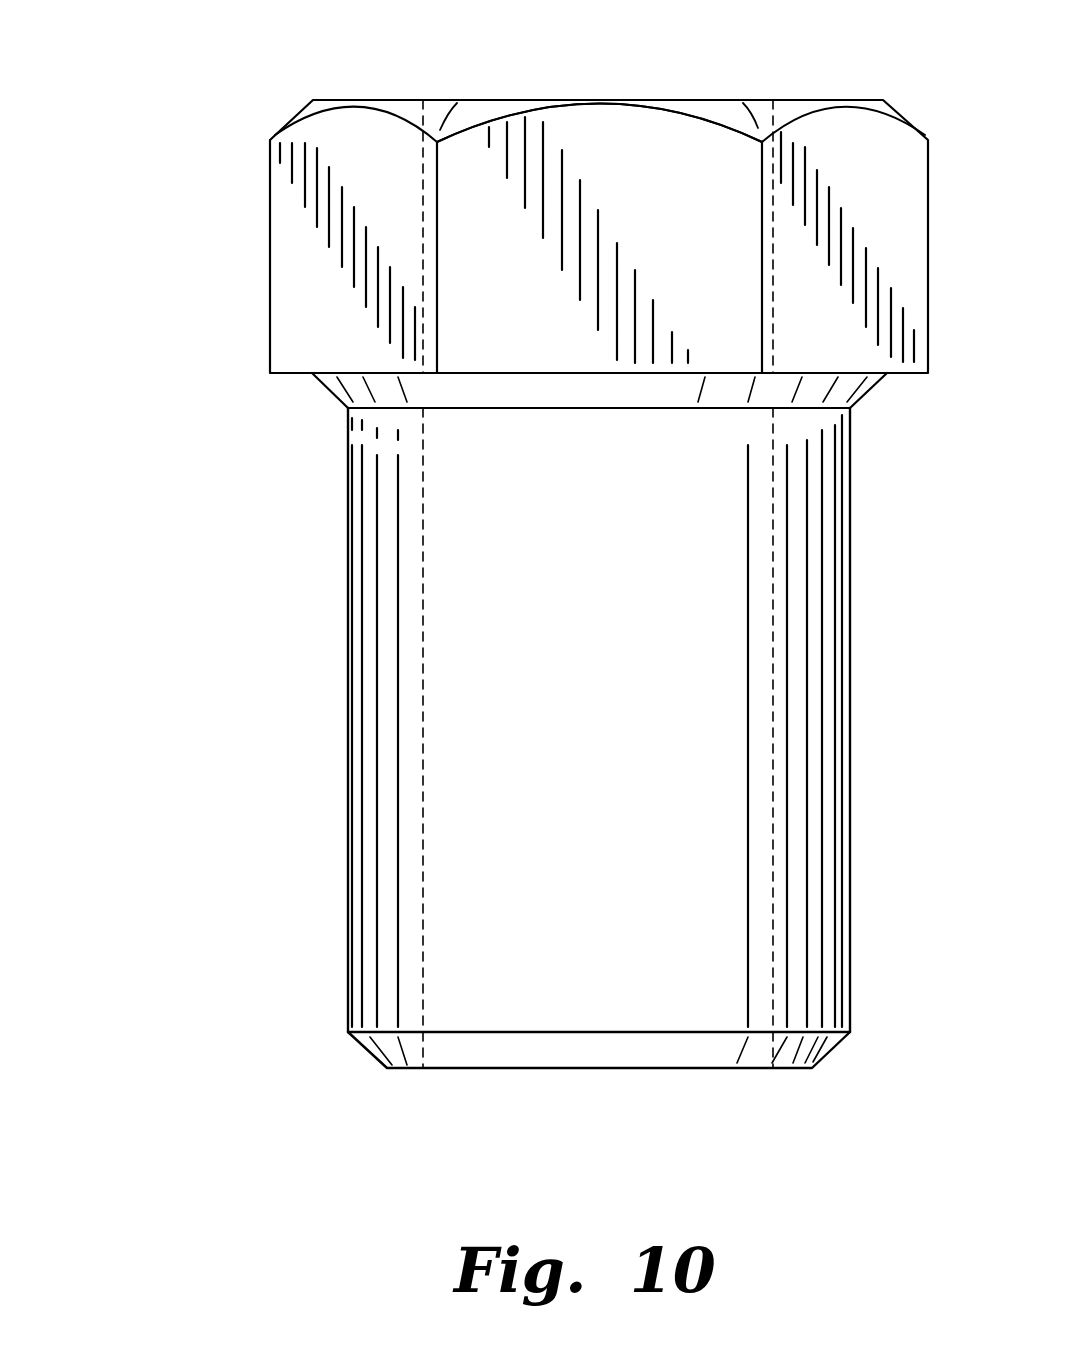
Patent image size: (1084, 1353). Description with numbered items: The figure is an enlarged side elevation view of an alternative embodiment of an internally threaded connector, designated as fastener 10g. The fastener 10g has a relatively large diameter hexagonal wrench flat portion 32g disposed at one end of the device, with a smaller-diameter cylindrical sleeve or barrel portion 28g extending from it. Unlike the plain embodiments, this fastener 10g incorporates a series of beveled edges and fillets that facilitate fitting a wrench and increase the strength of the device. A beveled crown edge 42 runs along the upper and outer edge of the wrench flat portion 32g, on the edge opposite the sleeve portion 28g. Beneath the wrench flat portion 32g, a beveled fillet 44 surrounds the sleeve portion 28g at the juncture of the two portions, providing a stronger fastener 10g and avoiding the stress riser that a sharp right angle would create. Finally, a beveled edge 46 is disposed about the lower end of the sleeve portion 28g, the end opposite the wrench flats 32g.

The internally threaded fastener 10g is at (487, 575).
The wrench flat portion 32g is at (477, 315).
The beveled crown edge 42 is at (713, 110).
The beveled fillet 44 is at (327, 386).
The cylindrical sleeve portion 28g is at (347, 693).
The beveled edge 46 is at (365, 1048).